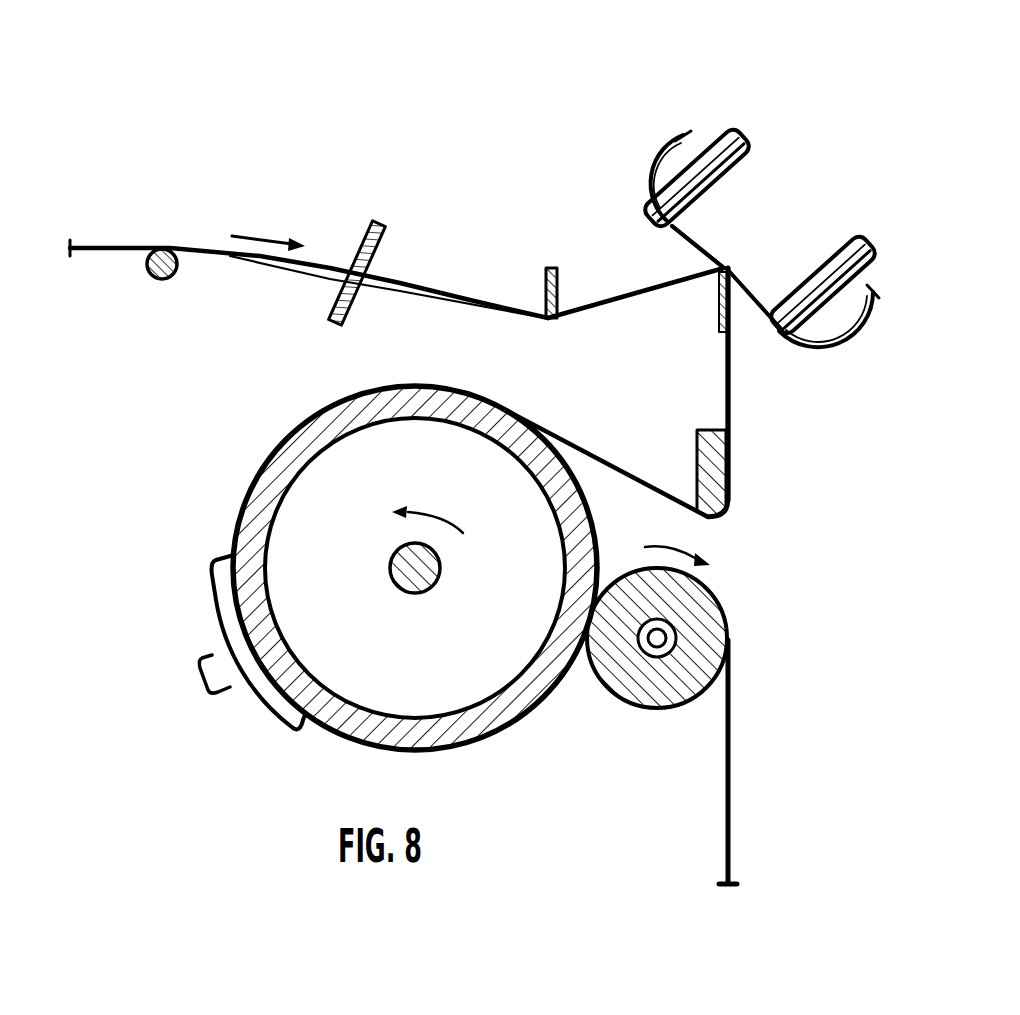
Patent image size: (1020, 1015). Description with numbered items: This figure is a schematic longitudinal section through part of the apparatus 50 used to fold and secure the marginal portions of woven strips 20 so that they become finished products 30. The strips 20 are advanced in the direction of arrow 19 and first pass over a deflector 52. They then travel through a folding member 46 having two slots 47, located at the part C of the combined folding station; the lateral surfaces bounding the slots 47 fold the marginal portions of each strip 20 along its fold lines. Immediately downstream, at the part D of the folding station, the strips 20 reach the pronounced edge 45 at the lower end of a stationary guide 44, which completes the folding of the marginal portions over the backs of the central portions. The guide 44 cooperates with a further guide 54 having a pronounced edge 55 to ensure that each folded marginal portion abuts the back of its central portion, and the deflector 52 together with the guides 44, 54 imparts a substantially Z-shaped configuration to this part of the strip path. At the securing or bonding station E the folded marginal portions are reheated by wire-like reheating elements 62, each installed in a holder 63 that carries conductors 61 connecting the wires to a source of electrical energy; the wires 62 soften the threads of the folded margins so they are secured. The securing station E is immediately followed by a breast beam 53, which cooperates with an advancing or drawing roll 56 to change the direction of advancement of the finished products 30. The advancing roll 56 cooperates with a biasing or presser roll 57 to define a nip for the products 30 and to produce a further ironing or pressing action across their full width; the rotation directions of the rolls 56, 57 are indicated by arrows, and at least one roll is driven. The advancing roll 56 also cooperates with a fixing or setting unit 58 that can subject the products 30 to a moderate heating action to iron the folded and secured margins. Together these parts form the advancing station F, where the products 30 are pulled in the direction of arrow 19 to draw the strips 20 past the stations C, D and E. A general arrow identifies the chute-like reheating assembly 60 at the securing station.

The strip 20 is at (80, 246).
The arrow indicating direction of advancement 19 is at (252, 236).
The deflector 52 is at (160, 280).
The folding member 46 is at (384, 235).
The slot 47 is at (357, 268).
The stationary guide 44 is at (547, 280).
The edge of guide 45 is at (560, 303).
The apparatus 50 is at (469, 133).
The chute 60 is at (779, 122).
The conductor 61 is at (667, 150).
The reheating wire 62 is at (698, 244).
The holder 63 is at (737, 160).
The further guide 54 is at (718, 333).
The edge of further guide 55 is at (718, 288).
The finished product 30 is at (733, 392).
The breast beam 53 is at (697, 453).
The advancing roll 56 is at (318, 433).
The presser roll 57 is at (710, 613).
The fixing unit 58 is at (218, 603).
The folding station part C is at (360, 138).
The folding station part D is at (547, 330).
The securing station E is at (725, 78).
The advancing station F is at (240, 470).